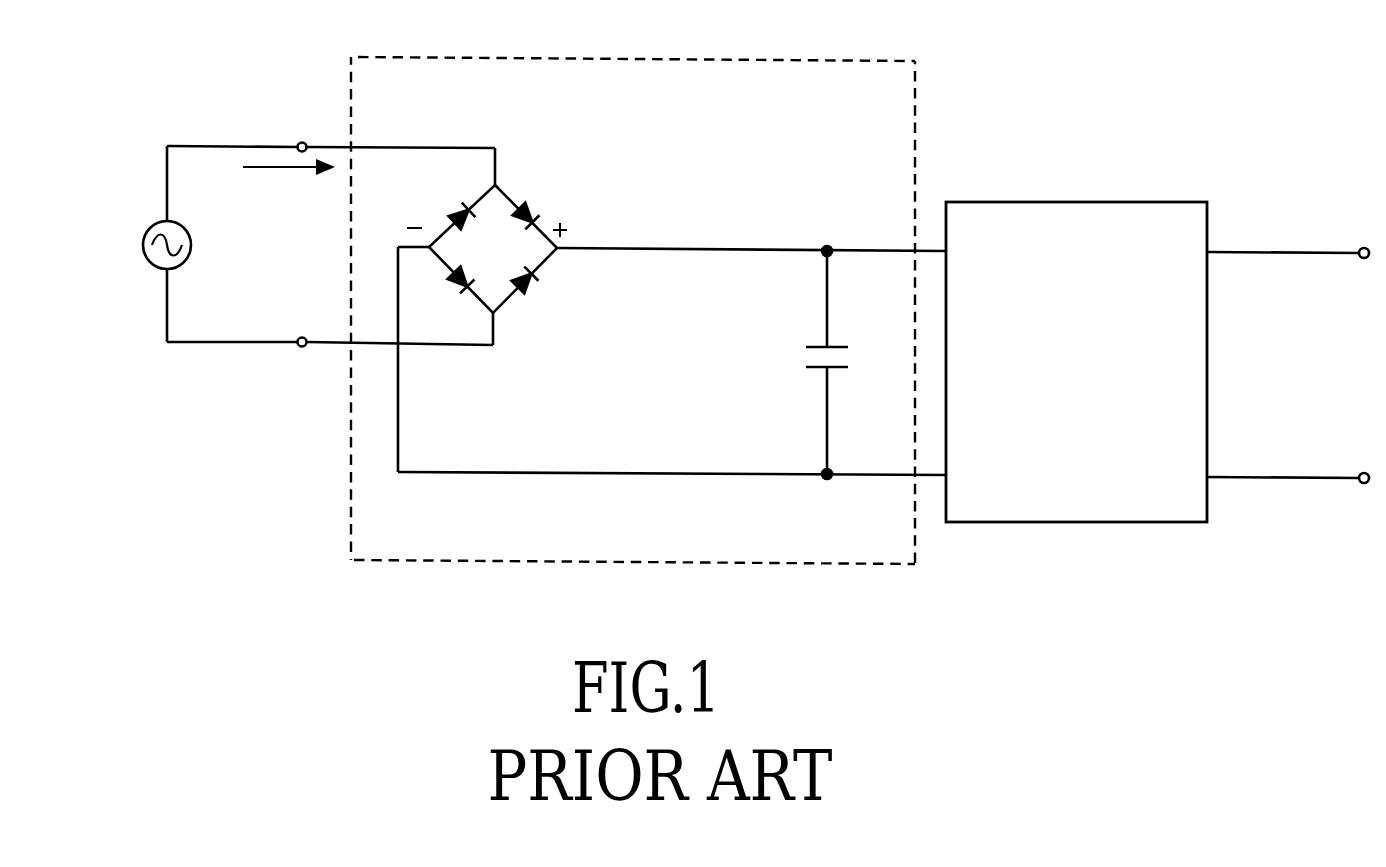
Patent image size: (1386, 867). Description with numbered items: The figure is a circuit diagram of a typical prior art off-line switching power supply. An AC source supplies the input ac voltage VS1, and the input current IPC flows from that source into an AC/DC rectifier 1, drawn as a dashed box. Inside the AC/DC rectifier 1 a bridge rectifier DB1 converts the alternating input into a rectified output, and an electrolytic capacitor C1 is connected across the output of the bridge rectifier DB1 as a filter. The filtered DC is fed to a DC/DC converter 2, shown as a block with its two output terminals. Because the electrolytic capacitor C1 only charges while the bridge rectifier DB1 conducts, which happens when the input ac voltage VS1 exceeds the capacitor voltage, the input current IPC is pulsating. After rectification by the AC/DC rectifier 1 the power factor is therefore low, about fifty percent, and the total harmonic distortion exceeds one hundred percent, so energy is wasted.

The AC/DC rectifier 1 is at (725, 297).
The DC/DC converter 2 is at (1137, 217).
The bridge rectifier DB1 is at (482, 219).
The electrolytic capacitor C1 is at (854, 362).
The input ac voltage VS1 is at (282, 245).
The input current IPC is at (284, 193).